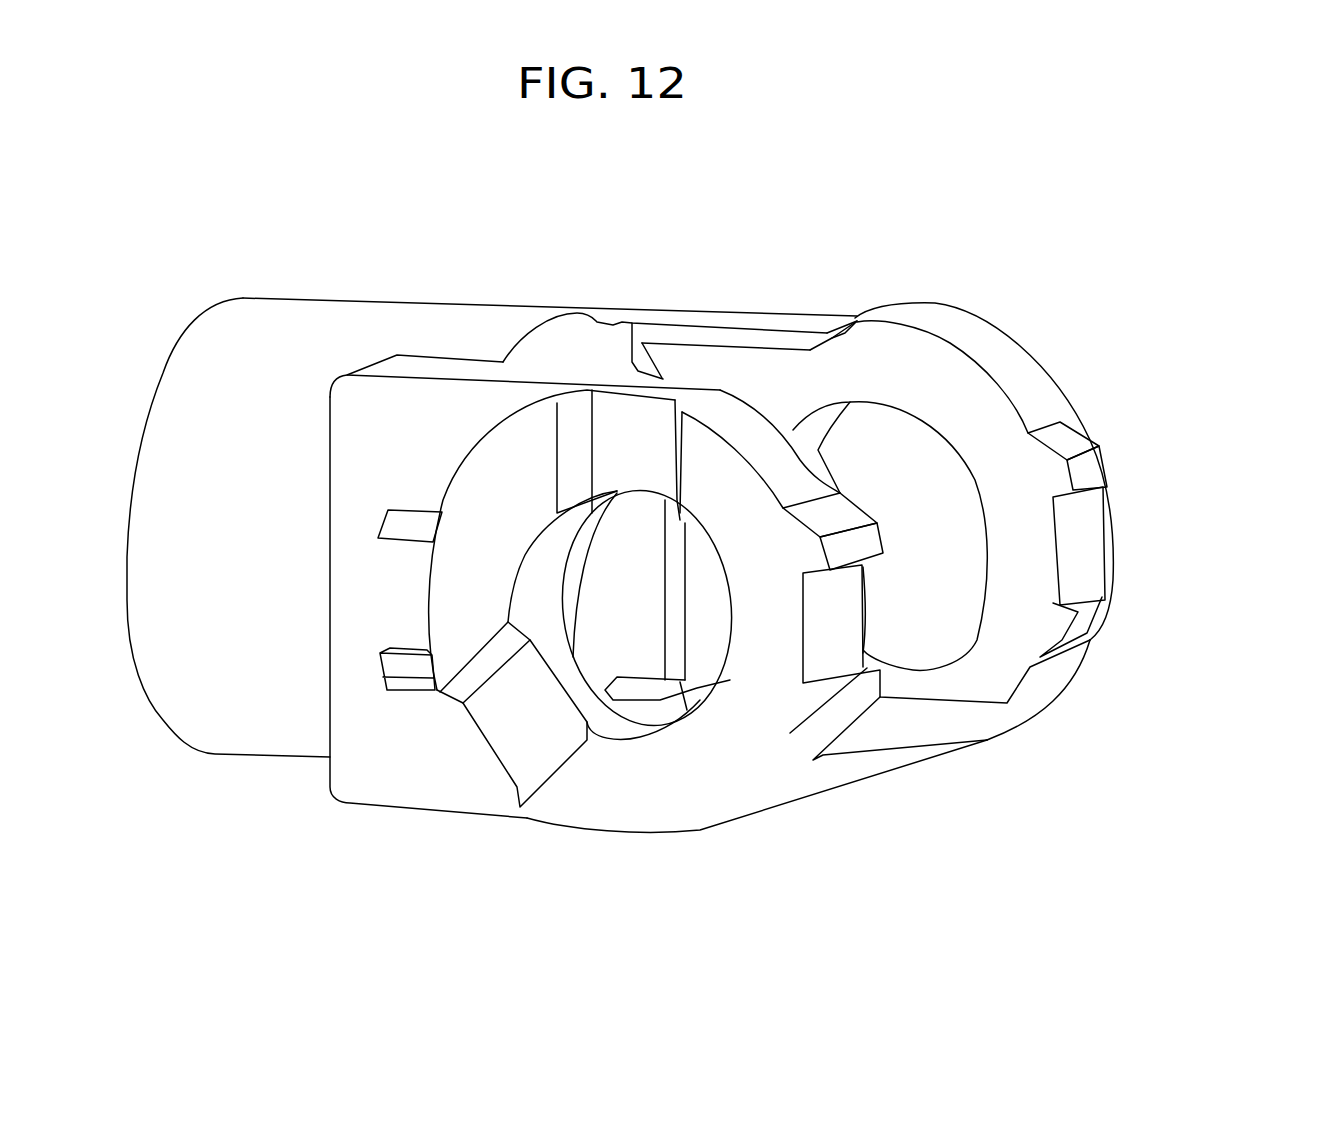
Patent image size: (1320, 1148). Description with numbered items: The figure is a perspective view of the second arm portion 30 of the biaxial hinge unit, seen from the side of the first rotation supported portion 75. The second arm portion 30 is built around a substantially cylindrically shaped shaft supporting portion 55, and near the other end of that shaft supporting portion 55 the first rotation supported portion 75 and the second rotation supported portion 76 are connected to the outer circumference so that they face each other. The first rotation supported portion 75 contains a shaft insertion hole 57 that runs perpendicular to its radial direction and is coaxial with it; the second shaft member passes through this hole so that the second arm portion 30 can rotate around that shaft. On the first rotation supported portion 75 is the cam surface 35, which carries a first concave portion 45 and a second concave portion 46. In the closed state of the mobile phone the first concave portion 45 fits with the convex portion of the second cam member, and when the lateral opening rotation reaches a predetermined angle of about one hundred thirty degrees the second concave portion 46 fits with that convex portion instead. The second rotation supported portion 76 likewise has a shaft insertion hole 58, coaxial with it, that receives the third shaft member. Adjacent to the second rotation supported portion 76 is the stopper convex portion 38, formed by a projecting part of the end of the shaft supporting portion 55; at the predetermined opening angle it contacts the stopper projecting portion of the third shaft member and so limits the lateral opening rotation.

The second arm portion 30 is at (682, 215).
The cam surface 35 is at (582, 790).
The stopper convex portion 38 is at (815, 323).
The first concave portion 45 is at (623, 423).
The second concave portion 46 is at (507, 735).
The shaft supporting portion 55 is at (273, 322).
The shaft insertion hole 57 is at (722, 636).
The shaft insertion hole 58 is at (988, 563).
The first rotation supported portion 75 is at (770, 704).
The second rotation supported portion 76 is at (1088, 546).